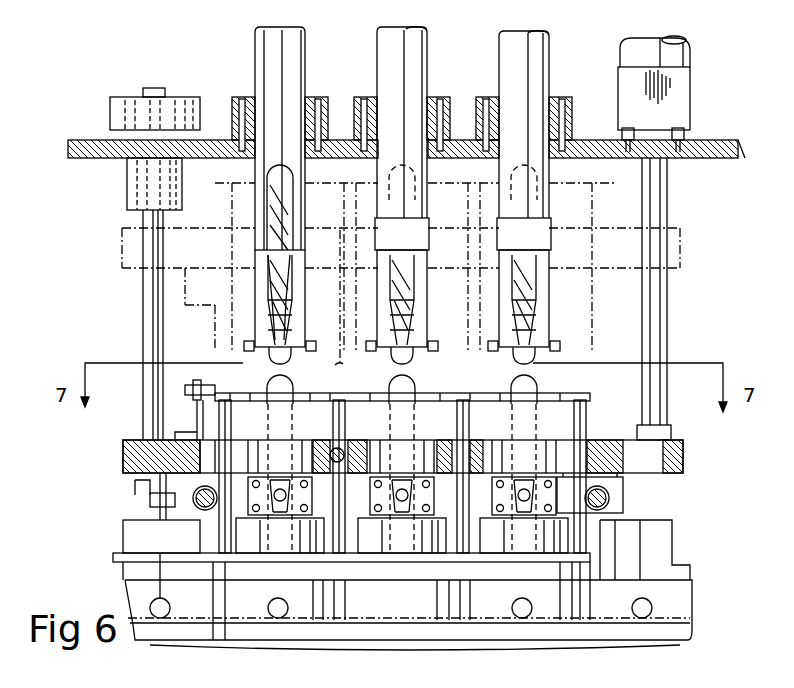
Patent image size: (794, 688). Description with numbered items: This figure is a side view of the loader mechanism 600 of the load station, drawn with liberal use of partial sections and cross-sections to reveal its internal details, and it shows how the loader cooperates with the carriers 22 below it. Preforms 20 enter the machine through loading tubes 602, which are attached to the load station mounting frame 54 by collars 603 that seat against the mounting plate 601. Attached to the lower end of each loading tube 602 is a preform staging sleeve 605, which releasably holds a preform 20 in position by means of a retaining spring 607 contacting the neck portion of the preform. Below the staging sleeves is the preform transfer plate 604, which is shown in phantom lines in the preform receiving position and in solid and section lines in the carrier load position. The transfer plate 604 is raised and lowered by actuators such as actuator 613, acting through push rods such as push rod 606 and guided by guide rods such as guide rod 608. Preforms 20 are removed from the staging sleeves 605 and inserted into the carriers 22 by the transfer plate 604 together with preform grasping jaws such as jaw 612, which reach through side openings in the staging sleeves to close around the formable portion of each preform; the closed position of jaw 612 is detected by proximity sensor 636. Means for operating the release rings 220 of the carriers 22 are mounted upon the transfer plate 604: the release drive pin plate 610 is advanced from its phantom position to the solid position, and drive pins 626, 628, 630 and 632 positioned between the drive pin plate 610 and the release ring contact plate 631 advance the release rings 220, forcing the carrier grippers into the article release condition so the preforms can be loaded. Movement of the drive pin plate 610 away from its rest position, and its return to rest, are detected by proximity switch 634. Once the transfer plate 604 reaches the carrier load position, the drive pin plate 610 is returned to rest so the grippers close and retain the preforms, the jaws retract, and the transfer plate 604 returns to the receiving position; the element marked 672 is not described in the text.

The loader mechanism 600 is at (193, 72).
The mounting plate 601 is at (700, 140).
The load station mounting frame 54 is at (695, 158).
The loading tube 602 is at (306, 52).
The collar 603 is at (241, 97).
The actuator 613 is at (620, 84).
The preform staging sleeve 605 is at (256, 222).
The preform 20 is at (256, 277).
The guide rod 608 is at (143, 318).
The push rod 606 is at (667, 318).
The proximity switch 634 is at (210, 378).
The retaining spring 607 is at (286, 358).
The center rod 672 is at (346, 368).
The release drive pin plate 610 is at (590, 395).
The drive pin 626 is at (586, 420).
The drive pin 632 is at (231, 430).
The drive pin 630 is at (346, 430).
The drive pin 628 is at (469, 430).
The preform transfer plate 604 is at (683, 448).
The preform grasping jaw 612 is at (624, 500).
The proximity sensor 636 is at (155, 505).
The release ring 220 is at (120, 553).
The release ring contact plate 631 is at (583, 560).
The carrier 22 is at (173, 658).